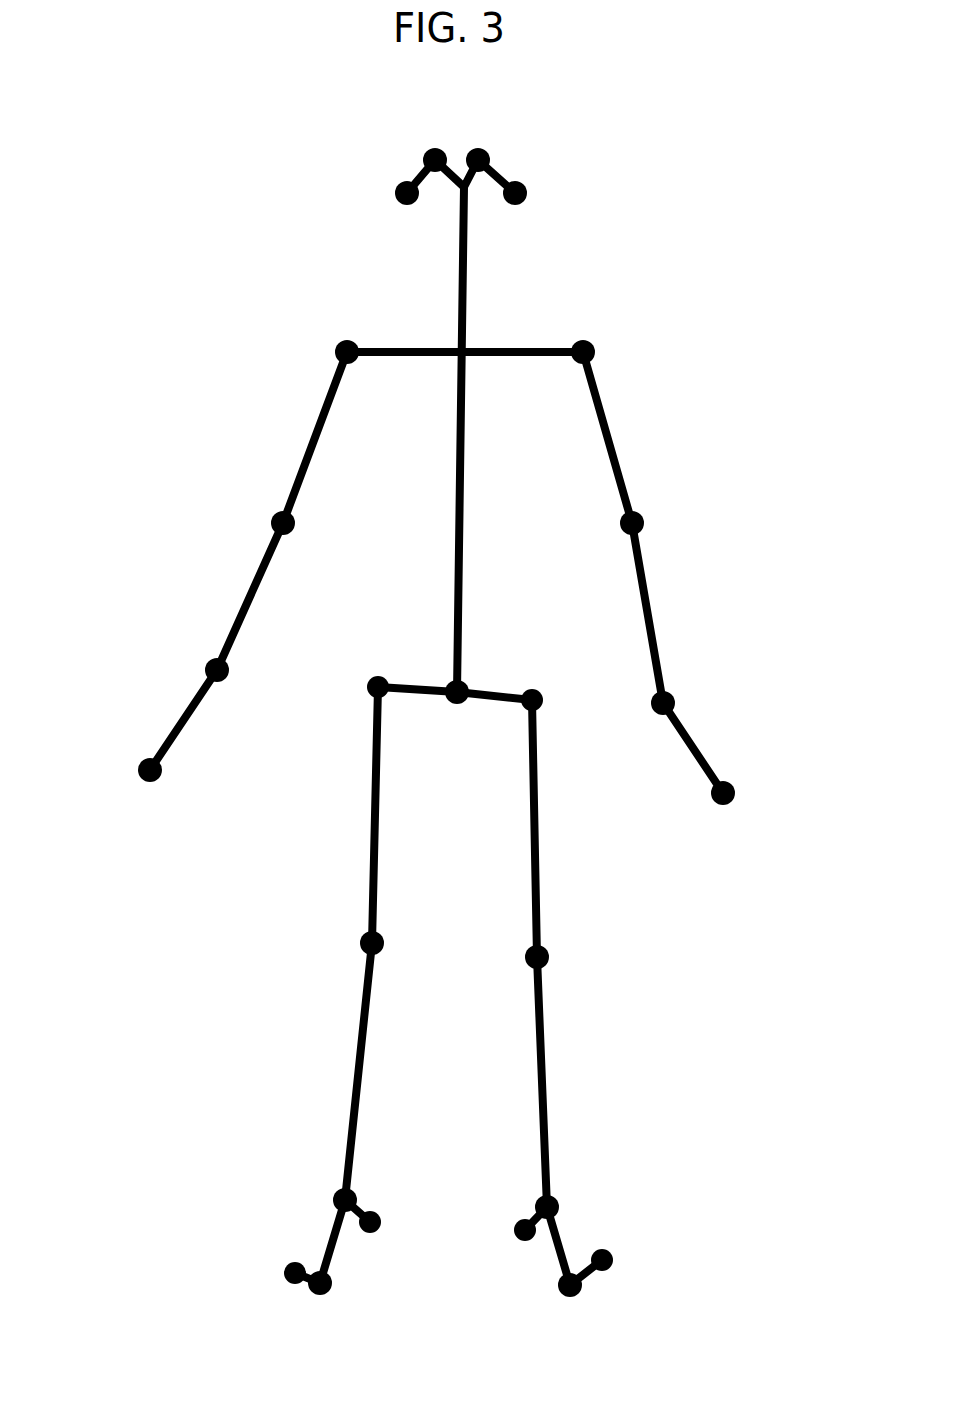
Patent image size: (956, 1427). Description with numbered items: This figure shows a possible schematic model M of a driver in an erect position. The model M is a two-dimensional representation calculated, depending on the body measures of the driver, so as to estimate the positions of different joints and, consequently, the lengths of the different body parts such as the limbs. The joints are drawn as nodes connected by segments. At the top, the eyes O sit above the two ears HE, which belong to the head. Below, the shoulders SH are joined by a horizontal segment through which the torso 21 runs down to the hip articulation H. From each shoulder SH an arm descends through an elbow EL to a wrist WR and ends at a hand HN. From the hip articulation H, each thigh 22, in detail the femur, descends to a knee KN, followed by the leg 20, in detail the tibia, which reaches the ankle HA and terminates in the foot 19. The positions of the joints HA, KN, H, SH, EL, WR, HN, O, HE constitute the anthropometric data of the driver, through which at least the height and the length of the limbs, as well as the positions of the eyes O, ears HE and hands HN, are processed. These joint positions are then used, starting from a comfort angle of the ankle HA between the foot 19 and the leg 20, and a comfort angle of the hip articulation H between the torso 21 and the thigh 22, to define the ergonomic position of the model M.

The model M is at (712, 220).
The eyes O is at (433, 150).
The ears HE is at (402, 205).
The shoulder joint SH is at (338, 350).
The elbow joint EL is at (272, 525).
The wrist joint WR is at (208, 670).
The hands HN is at (140, 767).
The hip articulation H is at (460, 702).
The torso 21 is at (462, 563).
The thigh 22 is at (375, 820).
The knee joint KN is at (362, 942).
The leg 20 is at (356, 1090).
The ankle HA is at (338, 1192).
The foot 19 is at (340, 1245).